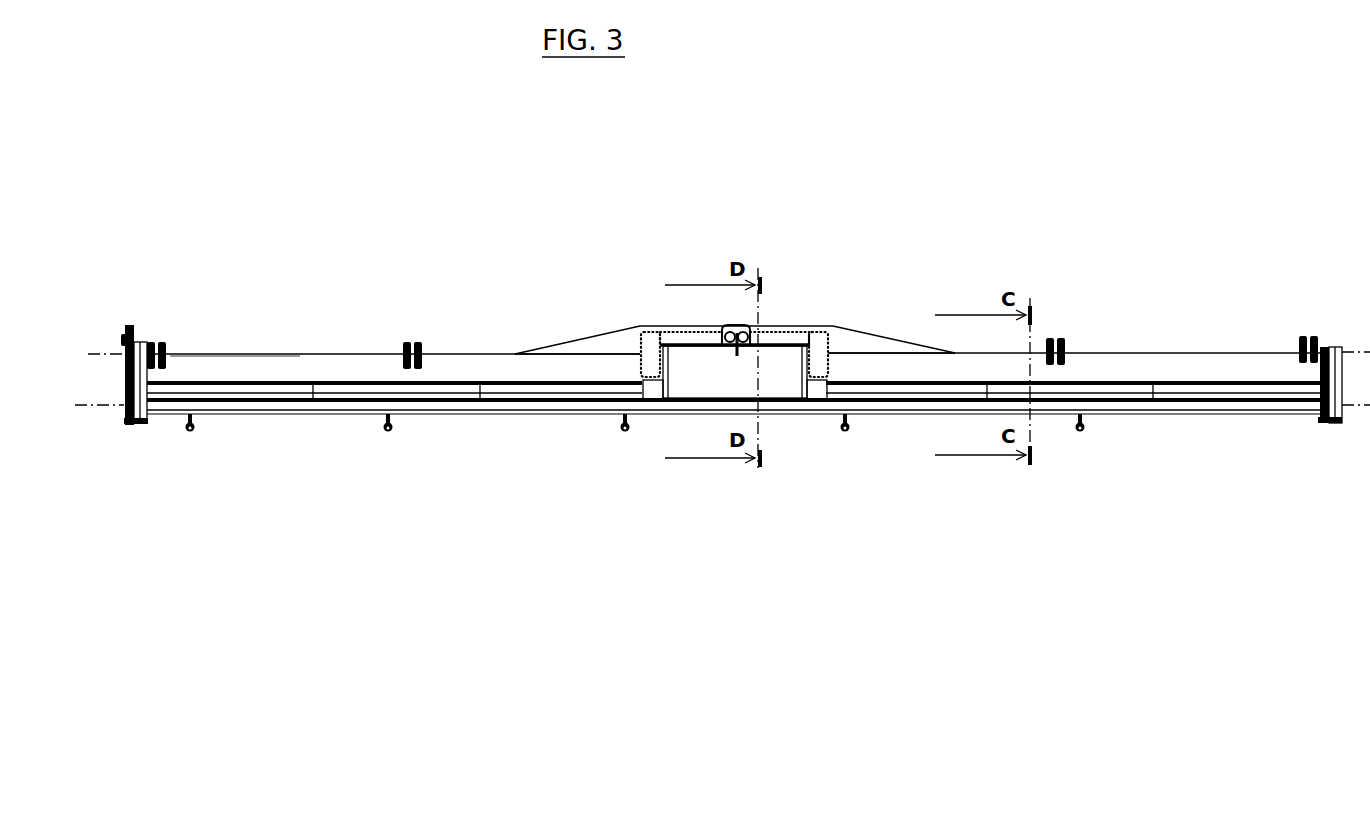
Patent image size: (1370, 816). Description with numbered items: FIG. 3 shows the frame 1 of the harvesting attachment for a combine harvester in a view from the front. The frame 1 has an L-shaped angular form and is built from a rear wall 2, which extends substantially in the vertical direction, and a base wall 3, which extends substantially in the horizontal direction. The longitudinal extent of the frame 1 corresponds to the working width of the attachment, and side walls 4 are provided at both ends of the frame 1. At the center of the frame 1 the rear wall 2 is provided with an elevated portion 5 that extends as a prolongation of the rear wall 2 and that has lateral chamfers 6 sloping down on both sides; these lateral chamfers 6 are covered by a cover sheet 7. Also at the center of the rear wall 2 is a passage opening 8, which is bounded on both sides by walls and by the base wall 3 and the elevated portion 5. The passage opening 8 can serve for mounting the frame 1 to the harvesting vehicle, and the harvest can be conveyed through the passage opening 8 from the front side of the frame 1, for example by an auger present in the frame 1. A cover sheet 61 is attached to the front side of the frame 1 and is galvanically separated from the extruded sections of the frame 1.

The frame 1 is at (940, 210).
The rear wall 2 is at (297, 368).
The base wall 3 is at (282, 413).
The side walls 4 is at (138, 352).
The elevated portion 5 is at (785, 322).
The lateral chamfers 6 is at (607, 347).
The cover sheet 7 is at (573, 342).
The passage opening 8 is at (698, 377).
The cover sheet 61 is at (225, 370).